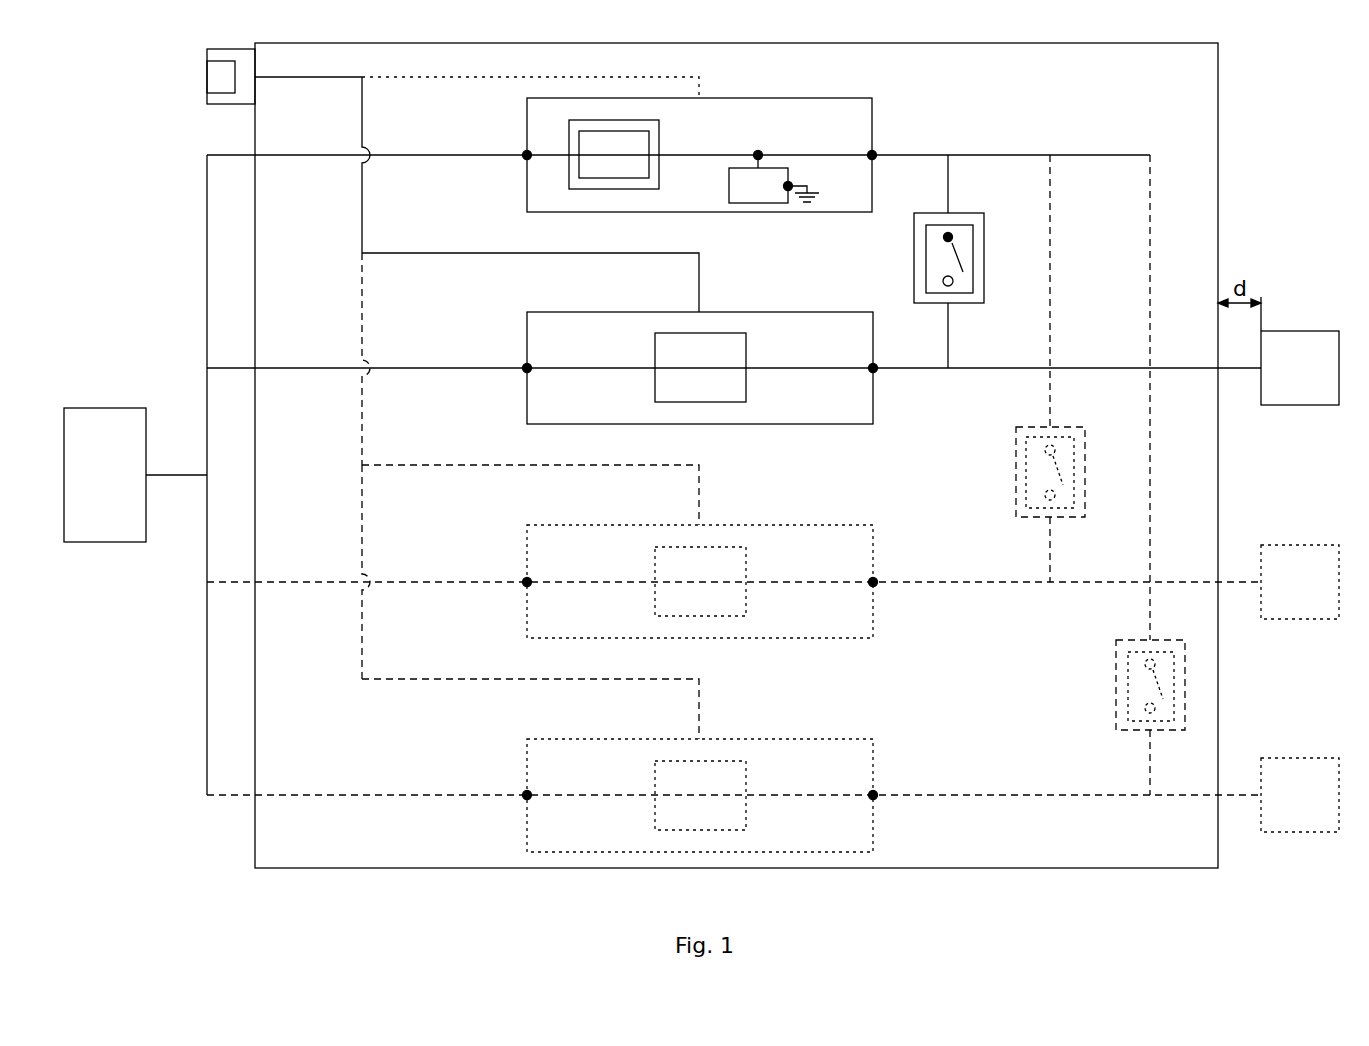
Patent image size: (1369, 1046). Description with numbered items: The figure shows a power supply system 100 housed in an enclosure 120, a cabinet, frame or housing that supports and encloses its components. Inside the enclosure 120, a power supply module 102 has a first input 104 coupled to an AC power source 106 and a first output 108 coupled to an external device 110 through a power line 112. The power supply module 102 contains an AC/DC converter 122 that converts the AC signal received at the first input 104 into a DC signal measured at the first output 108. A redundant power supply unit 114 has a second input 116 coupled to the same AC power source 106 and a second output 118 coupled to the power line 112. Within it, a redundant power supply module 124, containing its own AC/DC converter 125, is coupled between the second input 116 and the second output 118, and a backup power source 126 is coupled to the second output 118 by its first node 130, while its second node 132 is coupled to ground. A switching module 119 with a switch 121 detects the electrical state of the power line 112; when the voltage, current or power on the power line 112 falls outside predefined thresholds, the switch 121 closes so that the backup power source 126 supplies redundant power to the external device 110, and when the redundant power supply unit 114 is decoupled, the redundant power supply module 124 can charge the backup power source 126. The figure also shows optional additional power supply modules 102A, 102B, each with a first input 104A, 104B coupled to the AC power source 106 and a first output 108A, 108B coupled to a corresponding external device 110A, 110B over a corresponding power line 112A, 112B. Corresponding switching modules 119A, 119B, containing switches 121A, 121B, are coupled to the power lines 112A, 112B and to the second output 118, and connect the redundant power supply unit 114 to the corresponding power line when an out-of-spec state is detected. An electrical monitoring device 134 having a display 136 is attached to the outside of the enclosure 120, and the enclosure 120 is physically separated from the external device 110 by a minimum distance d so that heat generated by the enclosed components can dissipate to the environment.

The power supply system 100 is at (565, 875).
The power supply module 102 is at (874, 406).
The power supply module 102A is at (874, 620).
The power supply module 102B is at (874, 832).
The first input 104 is at (525, 368).
The first input 104A is at (525, 583).
The first input 104B is at (525, 796).
The AC power source 106 is at (105, 542).
The first output 108 is at (887, 343).
The first output 108A is at (875, 580).
The first output 108B is at (875, 793).
The external device 110 is at (1300, 405).
The external device 110A is at (1300, 619).
The external device 110B is at (1300, 832).
The power line 112 is at (1095, 368).
The power line 112A is at (1095, 582).
The power line 112B is at (1088, 795).
The redundant power supply unit 114 is at (850, 98).
The second input 116 is at (525, 153).
The second output 118 is at (874, 153).
The switching module 119 is at (970, 213).
The switching module 119A is at (1065, 427).
The switching module 119B is at (1165, 640).
The enclosure 120 is at (1218, 123).
The switch 121 is at (984, 245).
The switch 121A is at (1017, 470).
The switch 121B is at (1117, 683).
The AC/DC converter 122 is at (746, 350).
The redundant power supply module 124 is at (659, 140).
The AC/DC converter 125 is at (649, 131).
The backup power source 126 is at (733, 190).
The first node 130 is at (758, 153).
The second node 132 is at (797, 183).
The electrical monitoring device 134 is at (207, 55).
The display 136 is at (207, 82).